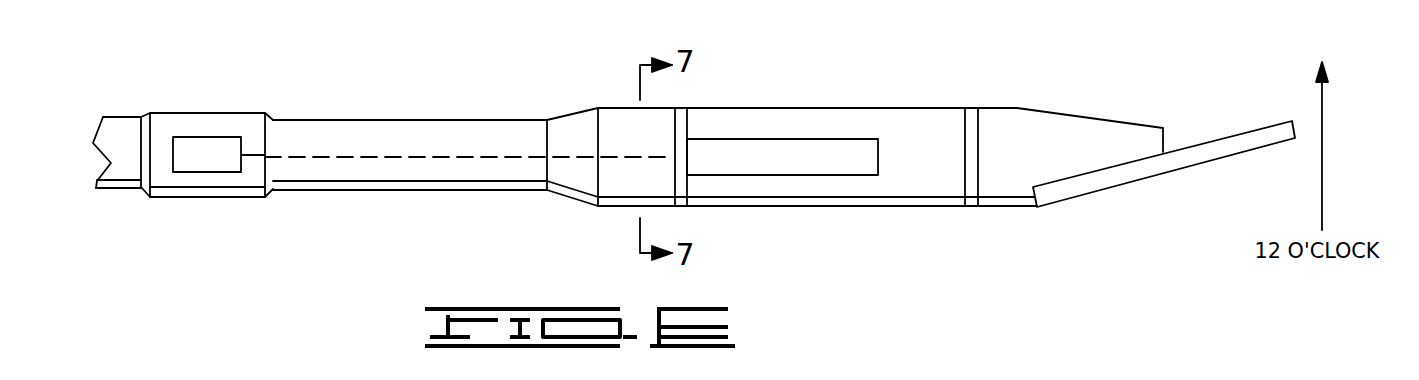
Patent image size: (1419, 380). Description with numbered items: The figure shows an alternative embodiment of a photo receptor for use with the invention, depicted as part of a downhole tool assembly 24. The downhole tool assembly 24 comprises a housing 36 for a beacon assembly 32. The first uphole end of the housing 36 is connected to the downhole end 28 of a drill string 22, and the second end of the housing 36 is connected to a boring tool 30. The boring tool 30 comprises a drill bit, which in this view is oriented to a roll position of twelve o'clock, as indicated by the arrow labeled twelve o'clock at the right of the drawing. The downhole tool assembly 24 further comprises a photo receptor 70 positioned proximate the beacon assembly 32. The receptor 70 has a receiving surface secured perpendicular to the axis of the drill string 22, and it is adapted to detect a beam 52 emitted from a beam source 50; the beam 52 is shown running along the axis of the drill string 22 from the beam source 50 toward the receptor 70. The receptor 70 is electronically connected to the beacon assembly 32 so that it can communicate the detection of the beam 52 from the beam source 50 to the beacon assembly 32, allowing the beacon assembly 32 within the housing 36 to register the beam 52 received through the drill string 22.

The drill string 22 is at (403, 119).
The downhole tool assembly 24 is at (838, 248).
The downhole end 28 is at (571, 110).
The boring tool 30 is at (1106, 190).
The beacon assembly 32 is at (853, 163).
The housing 36 is at (813, 108).
The beam source 50 is at (200, 142).
The beam 52 is at (405, 158).
The photo receptor 70 is at (673, 167).